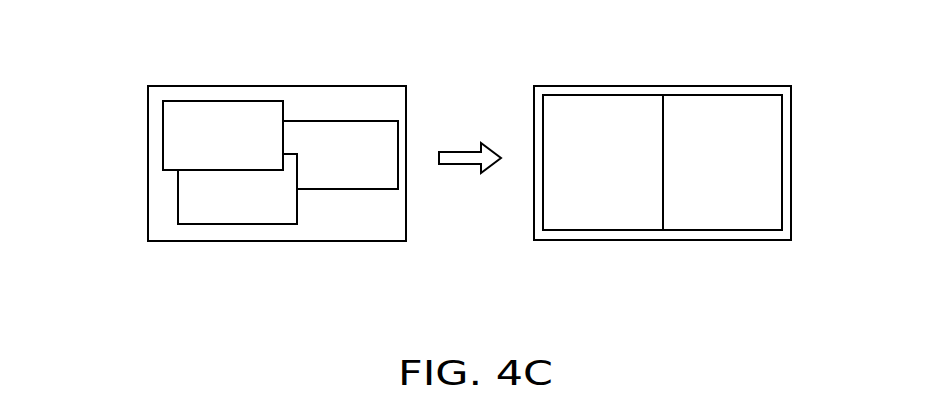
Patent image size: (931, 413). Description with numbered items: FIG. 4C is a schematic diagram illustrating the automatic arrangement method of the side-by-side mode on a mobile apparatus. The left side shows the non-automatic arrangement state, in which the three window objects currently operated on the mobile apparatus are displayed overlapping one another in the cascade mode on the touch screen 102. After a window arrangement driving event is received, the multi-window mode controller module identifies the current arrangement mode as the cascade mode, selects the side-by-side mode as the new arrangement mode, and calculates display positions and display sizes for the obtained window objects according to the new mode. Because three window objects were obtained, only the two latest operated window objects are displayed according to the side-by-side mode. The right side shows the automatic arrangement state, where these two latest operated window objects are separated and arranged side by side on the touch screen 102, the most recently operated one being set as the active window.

The touch screen 102 is at (148, 163).